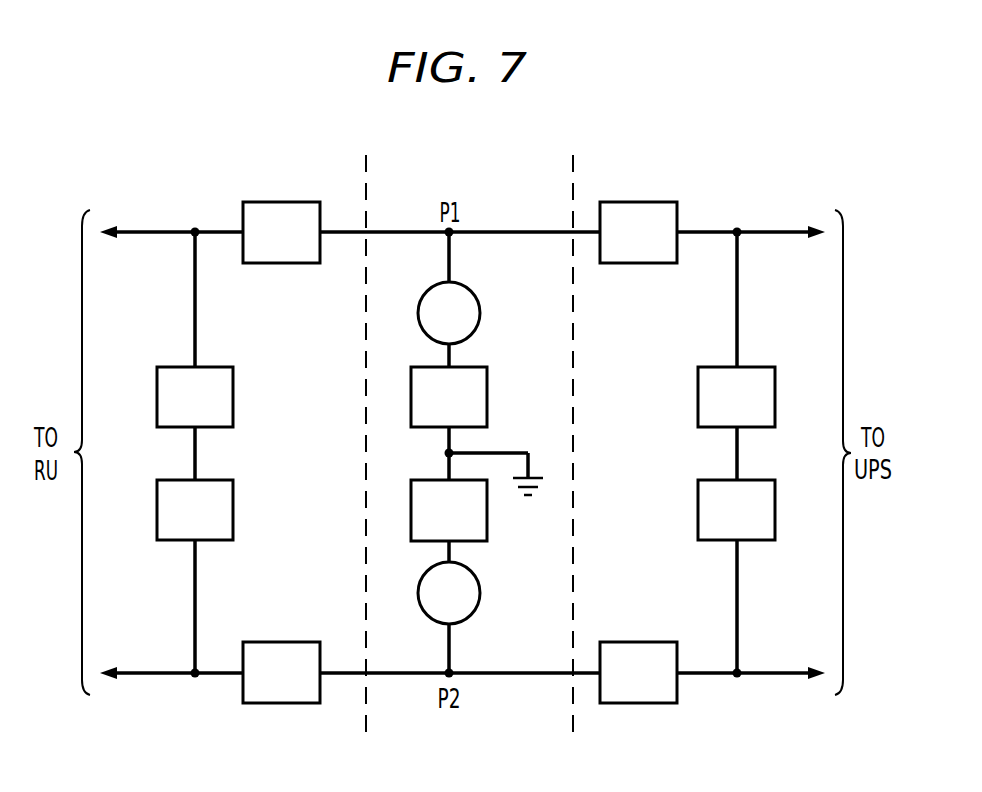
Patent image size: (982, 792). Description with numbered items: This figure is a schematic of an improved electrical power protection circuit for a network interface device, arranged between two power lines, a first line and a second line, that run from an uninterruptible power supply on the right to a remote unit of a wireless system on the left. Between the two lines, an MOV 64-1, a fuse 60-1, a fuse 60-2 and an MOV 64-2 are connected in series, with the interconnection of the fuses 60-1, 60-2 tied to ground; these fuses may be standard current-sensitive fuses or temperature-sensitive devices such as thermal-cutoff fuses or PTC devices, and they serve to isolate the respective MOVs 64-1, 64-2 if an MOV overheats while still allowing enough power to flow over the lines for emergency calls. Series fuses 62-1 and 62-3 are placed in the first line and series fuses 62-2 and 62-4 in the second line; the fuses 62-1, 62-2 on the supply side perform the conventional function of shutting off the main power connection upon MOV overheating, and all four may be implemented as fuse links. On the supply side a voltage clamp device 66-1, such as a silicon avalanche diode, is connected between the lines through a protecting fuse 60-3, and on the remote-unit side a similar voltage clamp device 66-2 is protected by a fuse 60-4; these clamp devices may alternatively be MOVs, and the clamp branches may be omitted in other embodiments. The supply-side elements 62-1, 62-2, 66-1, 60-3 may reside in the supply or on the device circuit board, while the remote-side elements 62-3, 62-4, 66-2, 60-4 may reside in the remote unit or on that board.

The fuse 62-1 is at (622, 202).
The fuse 62-2 is at (622, 642).
The fuse 62-3 is at (265, 202).
The fuse 62-4 is at (266, 642).
The fuse 60-1 is at (487, 392).
The fuse 60-2 is at (487, 518).
The fuse 60-3 is at (698, 390).
The fuse 60-4 is at (233, 402).
The MOV 64-1 is at (476, 293).
The MOV 64-2 is at (474, 613).
The voltage clamp device 66-1 is at (698, 510).
The voltage clamp device 66-2 is at (233, 512).